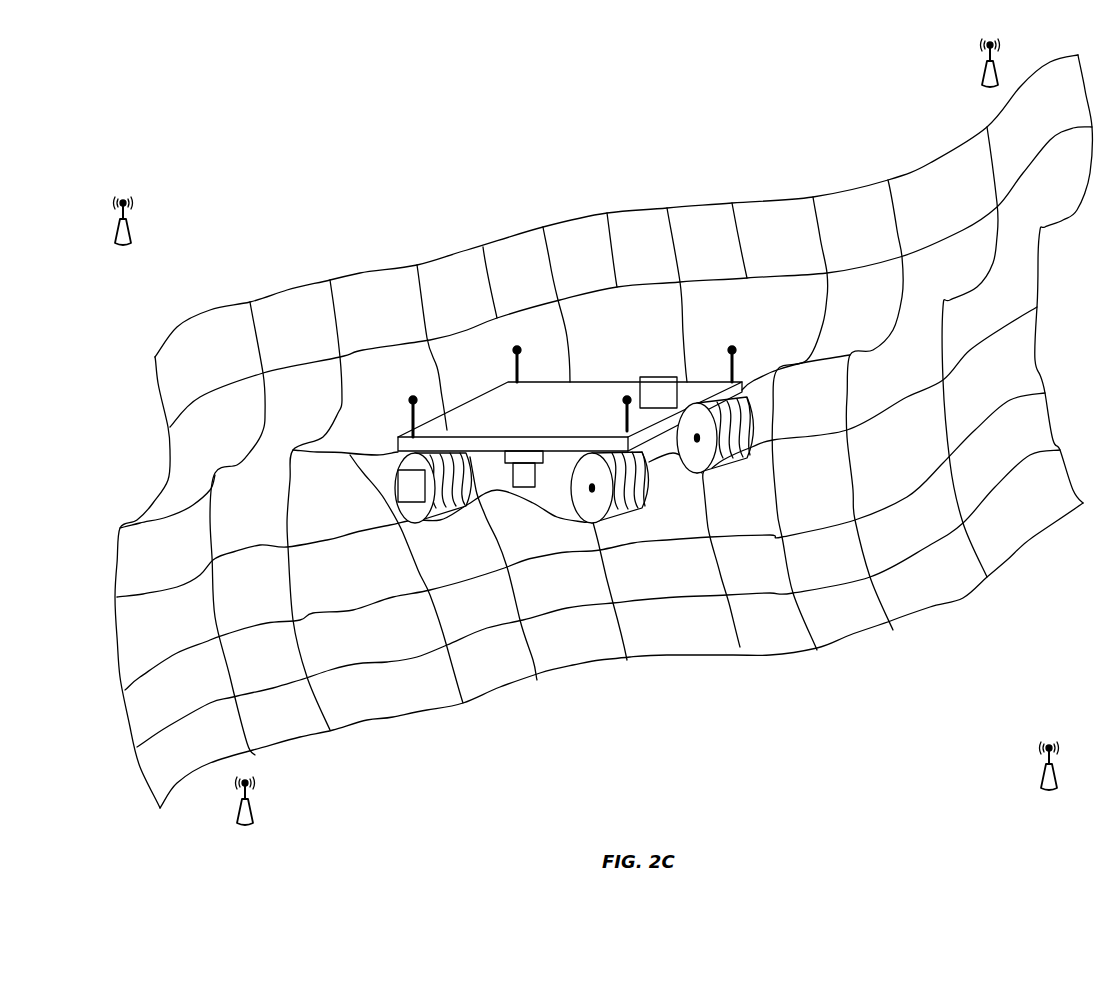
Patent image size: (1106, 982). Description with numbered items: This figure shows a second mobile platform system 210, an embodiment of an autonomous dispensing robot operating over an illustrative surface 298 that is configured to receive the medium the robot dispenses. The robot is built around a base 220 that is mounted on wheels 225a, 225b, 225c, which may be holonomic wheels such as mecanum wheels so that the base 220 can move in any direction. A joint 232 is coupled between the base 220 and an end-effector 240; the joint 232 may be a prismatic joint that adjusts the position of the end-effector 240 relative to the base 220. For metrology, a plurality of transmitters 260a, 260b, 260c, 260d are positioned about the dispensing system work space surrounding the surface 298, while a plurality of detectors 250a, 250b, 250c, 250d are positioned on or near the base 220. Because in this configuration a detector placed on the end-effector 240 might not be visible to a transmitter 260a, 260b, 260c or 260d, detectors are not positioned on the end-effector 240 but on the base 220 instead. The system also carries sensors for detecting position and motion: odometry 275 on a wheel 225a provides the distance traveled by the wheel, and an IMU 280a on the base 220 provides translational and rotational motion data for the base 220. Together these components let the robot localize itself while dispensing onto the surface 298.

The second mobile platform system 210 is at (590, 304).
The base 220 is at (556, 394).
The wheel 225a is at (450, 500).
The wheel 225b is at (641, 491).
The wheel 225c is at (701, 456).
The joint 232 is at (507, 455).
The end-effector 240 is at (538, 472).
The detector 250a is at (410, 423).
The detector 250b is at (513, 375).
The detector 250c is at (734, 375).
The detector 250d is at (624, 422).
The transmitter 260a is at (135, 231).
The transmitter 260b is at (981, 71).
The transmitter 260c is at (1040, 776).
The transmitter 260d is at (255, 818).
The odometry 275 is at (400, 487).
The IMU 280a is at (656, 390).
The surface 298 is at (1064, 408).